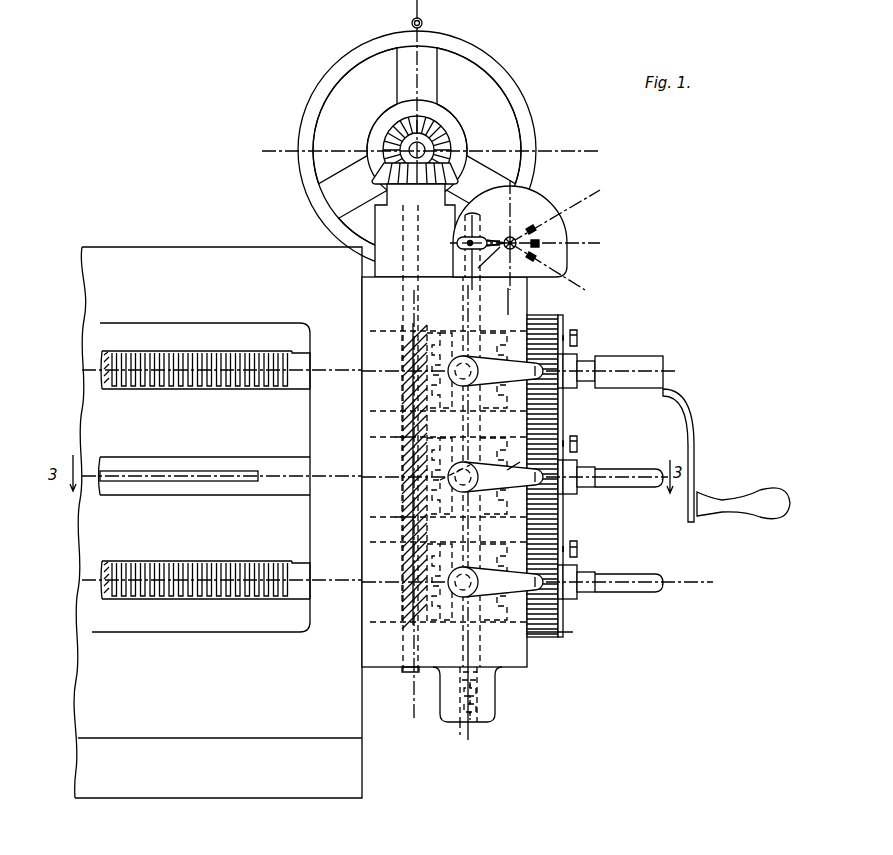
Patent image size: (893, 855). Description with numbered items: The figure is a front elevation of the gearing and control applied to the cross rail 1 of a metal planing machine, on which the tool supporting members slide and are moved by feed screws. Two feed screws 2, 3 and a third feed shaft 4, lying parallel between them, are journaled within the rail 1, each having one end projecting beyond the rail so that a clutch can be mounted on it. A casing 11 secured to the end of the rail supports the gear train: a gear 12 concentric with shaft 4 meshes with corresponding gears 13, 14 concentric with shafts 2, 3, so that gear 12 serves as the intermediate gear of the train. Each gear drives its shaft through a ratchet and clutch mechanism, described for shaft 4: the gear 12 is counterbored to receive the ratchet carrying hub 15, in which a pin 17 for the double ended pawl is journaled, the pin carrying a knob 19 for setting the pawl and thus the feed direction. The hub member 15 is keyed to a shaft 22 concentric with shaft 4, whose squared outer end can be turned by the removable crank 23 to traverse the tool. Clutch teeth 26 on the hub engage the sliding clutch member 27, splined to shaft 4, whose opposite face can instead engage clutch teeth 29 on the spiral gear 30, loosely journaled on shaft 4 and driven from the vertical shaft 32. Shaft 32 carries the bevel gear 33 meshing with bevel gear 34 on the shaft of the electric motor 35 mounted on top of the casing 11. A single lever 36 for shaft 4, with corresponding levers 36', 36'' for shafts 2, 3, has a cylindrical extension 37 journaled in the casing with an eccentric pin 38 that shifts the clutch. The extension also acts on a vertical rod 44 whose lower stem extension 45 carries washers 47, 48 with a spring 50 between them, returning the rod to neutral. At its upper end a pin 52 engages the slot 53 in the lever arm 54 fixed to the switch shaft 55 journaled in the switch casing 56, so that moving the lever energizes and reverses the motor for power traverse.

The cross rail 1 is at (228, 787).
The feed screw 2 is at (218, 350).
The feed screw 3 is at (213, 565).
The feed shaft 4 is at (247, 462).
The casing 11 is at (520, 652).
The gear 12 is at (548, 498).
The gear 13 is at (558, 325).
The gear 14 is at (572, 632).
The ratchet carrying hub 15 is at (567, 465).
The pin 17 is at (568, 428).
The knob 19 is at (580, 440).
The shaft 22 is at (634, 472).
The removable crank 23 is at (695, 437).
The clutch teeth 26 is at (504, 476).
The sliding clutch member 27 is at (471, 476).
The clutch teeth 29 is at (438, 476).
The spiral gear 30 is at (402, 480).
The vertical shaft 32 is at (420, 297).
The bevel gear 33 is at (458, 176).
The bevel gear 34 is at (440, 140).
The electric motor 35 is at (515, 84).
The lever 36 is at (495, 489).
The lever 36' is at (495, 361).
The lever 36'' is at (495, 570).
The cylindrical extension 37 is at (507, 480).
The eccentric pin 38 is at (475, 470).
The rod 44 is at (510, 268).
The stem extension 45 is at (478, 700).
The washer 47 is at (460, 720).
The washer 48 is at (470, 668).
The spring 50 is at (478, 695).
The pin 52 is at (458, 240).
The slot 53 is at (462, 247).
The lever arm 54 is at (482, 237).
The switch shaft 55 is at (514, 238).
The switch casing 56 is at (536, 200).